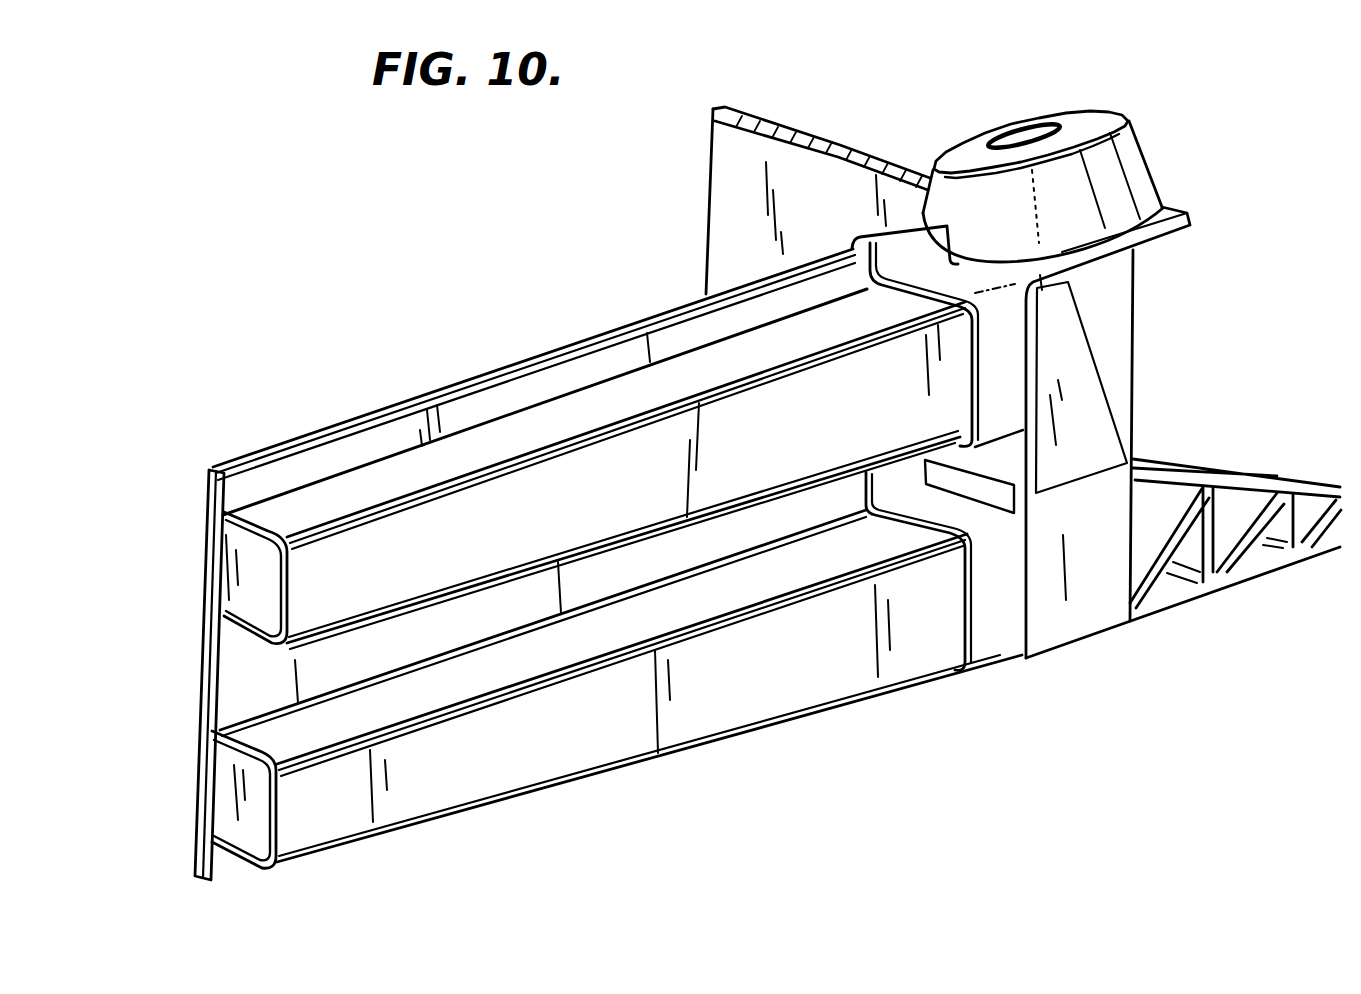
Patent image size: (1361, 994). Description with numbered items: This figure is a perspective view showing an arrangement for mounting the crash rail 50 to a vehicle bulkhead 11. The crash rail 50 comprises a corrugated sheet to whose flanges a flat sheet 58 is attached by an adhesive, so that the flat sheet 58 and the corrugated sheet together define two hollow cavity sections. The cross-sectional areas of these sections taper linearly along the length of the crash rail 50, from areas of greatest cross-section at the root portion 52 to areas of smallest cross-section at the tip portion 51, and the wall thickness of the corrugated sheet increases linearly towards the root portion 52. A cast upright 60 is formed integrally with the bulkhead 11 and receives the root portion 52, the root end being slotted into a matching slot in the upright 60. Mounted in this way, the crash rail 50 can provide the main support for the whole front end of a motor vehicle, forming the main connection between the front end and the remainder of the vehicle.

The bulkhead 11 is at (722, 184).
The crash rail 50 is at (487, 365).
The tip portion 51 is at (203, 706).
The root portion 52 is at (930, 655).
The flat sheet 58 is at (212, 540).
The cast upright 60 is at (992, 640).